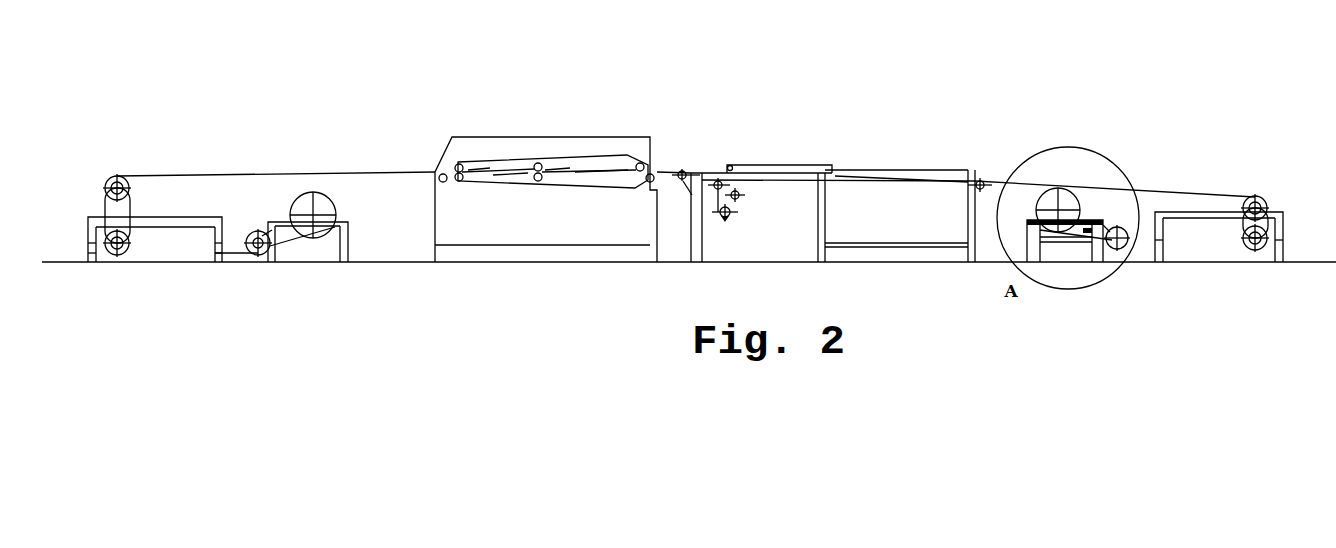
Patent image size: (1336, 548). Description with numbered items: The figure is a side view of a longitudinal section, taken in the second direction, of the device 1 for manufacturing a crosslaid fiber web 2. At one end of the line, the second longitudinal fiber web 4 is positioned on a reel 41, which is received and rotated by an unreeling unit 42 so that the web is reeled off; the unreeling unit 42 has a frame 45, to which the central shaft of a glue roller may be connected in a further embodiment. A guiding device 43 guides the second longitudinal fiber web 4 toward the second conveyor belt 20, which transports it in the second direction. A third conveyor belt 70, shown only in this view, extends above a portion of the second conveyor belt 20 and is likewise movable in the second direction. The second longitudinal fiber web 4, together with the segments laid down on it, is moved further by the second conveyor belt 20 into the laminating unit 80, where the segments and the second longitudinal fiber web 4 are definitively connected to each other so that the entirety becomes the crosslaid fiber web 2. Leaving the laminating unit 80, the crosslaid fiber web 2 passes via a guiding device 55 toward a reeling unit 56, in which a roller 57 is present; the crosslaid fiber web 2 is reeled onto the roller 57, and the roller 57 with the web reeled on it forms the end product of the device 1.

The device 1 is at (942, 127).
The crosslaid fiber web 2 is at (353, 172).
The second longitudinal fiber web 4 is at (1193, 192).
The second conveyor belt 20 is at (707, 170).
The reel 41 is at (1050, 200).
The unreeling unit 42 is at (1095, 267).
The guiding device 43 is at (1262, 183).
The frame 45 is at (1089, 222).
The guiding device 55 is at (105, 153).
The reeling unit 56 is at (315, 267).
The roller 57 is at (303, 200).
The third conveyor belt 70 is at (795, 165).
The laminating unit 80 is at (523, 115).